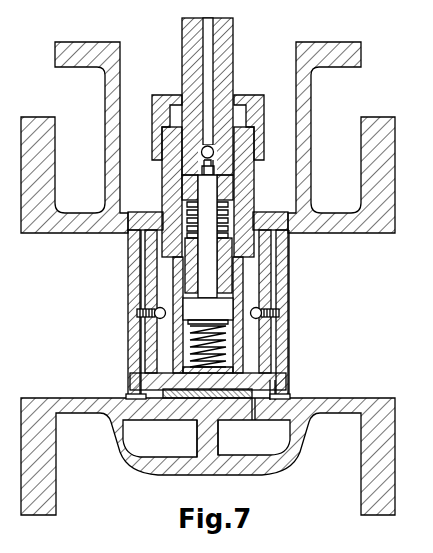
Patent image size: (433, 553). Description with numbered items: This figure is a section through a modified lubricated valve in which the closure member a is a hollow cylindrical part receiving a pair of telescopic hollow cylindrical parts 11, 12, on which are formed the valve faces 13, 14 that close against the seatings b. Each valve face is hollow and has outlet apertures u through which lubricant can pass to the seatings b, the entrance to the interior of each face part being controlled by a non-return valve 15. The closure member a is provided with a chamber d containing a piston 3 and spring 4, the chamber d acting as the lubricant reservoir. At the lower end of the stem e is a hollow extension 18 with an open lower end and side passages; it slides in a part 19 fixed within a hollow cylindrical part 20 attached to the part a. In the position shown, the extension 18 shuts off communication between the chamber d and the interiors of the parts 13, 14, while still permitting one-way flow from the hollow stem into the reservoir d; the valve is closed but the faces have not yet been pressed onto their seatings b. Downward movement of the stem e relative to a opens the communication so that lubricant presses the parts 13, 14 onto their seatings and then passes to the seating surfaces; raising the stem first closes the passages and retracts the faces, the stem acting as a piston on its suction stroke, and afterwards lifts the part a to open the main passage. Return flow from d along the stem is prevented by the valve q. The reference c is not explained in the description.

The stem e is at (228, 60).
The valve q is at (214, 151).
The seatings b is at (130, 222).
The hollow extension 18 is at (236, 212).
The part 19 is at (286, 250).
The hollow cylindrical part 20 is at (273, 280).
The chamber d is at (260, 300).
The non-return valve 15 is at (142, 310).
The valve face 13 is at (152, 338).
The valve face 14 is at (267, 342).
The piston 3 is at (208, 311).
The spring 4 is at (191, 340).
The outlet apertures u is at (133, 397).
The valve body c is at (75, 413).
The telescopic hollow cylindrical part 11 is at (188, 387).
The closure member a is at (233, 402).
The telescopic hollow cylindrical part 12 is at (250, 407).